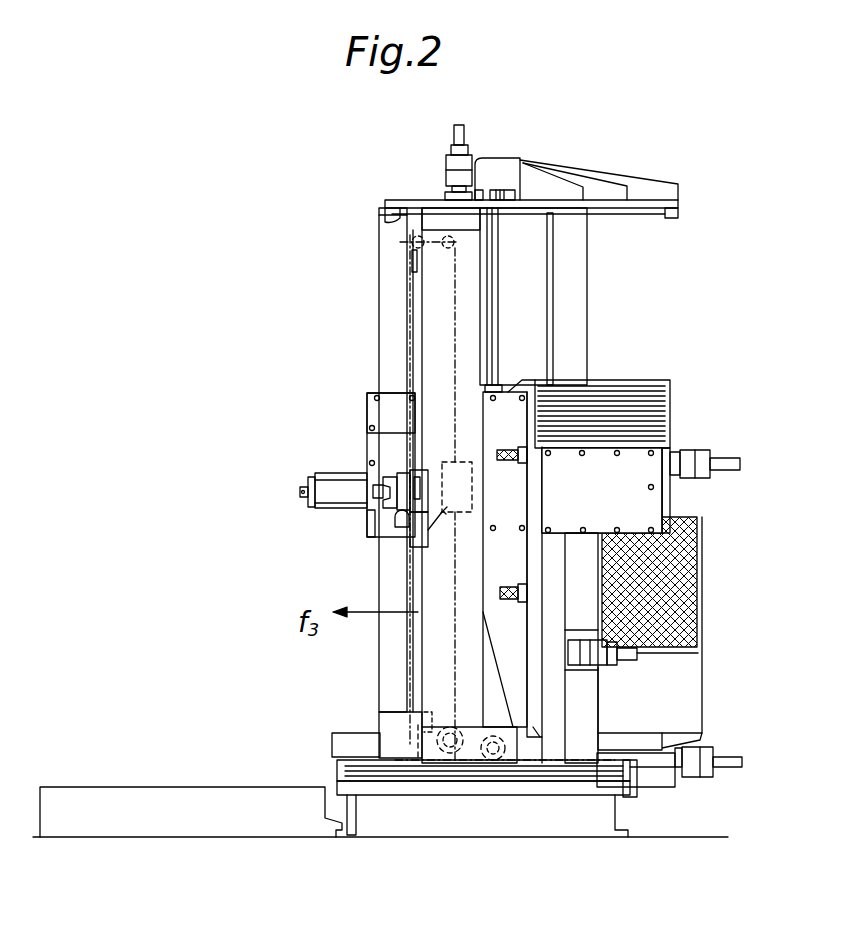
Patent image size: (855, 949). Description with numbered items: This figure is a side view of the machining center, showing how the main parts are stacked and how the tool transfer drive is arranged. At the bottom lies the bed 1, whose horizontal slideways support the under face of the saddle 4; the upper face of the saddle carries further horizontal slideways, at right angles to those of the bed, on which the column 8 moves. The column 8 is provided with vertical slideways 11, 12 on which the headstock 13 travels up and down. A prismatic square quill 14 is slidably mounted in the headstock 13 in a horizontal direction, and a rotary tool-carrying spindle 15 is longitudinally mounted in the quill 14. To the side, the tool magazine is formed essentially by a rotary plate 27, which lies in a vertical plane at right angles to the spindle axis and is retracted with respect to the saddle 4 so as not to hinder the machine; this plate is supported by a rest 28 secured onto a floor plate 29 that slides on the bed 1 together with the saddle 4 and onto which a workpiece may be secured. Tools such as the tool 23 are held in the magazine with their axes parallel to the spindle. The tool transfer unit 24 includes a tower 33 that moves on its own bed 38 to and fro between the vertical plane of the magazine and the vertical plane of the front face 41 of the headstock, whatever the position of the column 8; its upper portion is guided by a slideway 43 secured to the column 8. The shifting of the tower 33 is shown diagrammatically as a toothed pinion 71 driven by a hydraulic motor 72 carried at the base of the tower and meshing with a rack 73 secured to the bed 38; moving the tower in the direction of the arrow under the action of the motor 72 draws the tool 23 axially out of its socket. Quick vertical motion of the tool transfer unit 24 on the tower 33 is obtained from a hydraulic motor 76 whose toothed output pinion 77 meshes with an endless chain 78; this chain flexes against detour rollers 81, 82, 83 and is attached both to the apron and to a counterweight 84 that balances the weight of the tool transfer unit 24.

The bed 1 is at (602, 812).
The saddle 4 is at (338, 742).
The column 8 is at (535, 275).
The vertical slideway 11 is at (390, 302).
The vertical slideway 12 is at (578, 330).
The headstock 13 is at (378, 438).
The prismatic square quill 14 is at (322, 473).
The rotary tool-carrying spindle 15 is at (308, 508).
The tool 23 is at (507, 588).
The tool transfer unit 24 is at (405, 467).
The rotary plate 27 is at (533, 737).
The rest 28 is at (555, 748).
The floor plate 29 is at (80, 803).
The tower 33 is at (467, 358).
The bed 38 is at (433, 788).
The front face 41 is at (363, 408).
The slideway 43 is at (390, 221).
The toothed pinion 71 is at (495, 767).
The hydraulic motor 72 is at (510, 775).
The rack 73 is at (468, 780).
The hydraulic motor 76 is at (433, 728).
The toothed output pinion 77 is at (447, 727).
The endless chain 78 is at (453, 625).
The detour roller 81 is at (418, 760).
The detour roller 82 is at (445, 230).
The detour roller 83 is at (413, 242).
The counterweight 84 is at (423, 532).